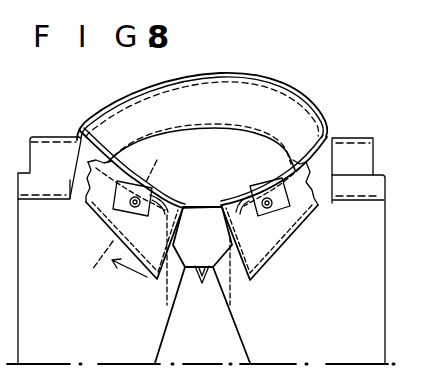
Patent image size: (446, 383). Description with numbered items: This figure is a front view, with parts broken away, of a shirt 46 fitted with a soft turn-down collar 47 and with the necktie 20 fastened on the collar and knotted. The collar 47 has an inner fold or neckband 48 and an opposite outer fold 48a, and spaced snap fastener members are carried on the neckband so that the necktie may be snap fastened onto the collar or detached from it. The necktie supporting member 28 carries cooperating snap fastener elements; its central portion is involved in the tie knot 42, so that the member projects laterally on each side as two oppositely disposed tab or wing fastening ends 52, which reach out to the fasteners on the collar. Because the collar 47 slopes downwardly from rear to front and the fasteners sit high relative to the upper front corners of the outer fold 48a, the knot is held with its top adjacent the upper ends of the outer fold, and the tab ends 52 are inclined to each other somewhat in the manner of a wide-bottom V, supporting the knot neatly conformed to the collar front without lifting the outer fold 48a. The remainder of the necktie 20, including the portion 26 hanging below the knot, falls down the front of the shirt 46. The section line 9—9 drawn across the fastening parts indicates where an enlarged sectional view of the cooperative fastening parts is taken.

The section line 9— 9 is at (126, 219).
The necktie 20 is at (246, 333).
The necktie front panel 26 is at (165, 328).
The necktie supporting member 28 is at (269, 246).
The collar loop 42 is at (222, 188).
The shirt 46 is at (385, 190).
The turn down collar 47 is at (277, 96).
The inner fold or neckband 48 is at (313, 211).
The outer fold 48a is at (84, 203).
The tab or wing fastening ends 52 is at (112, 216).